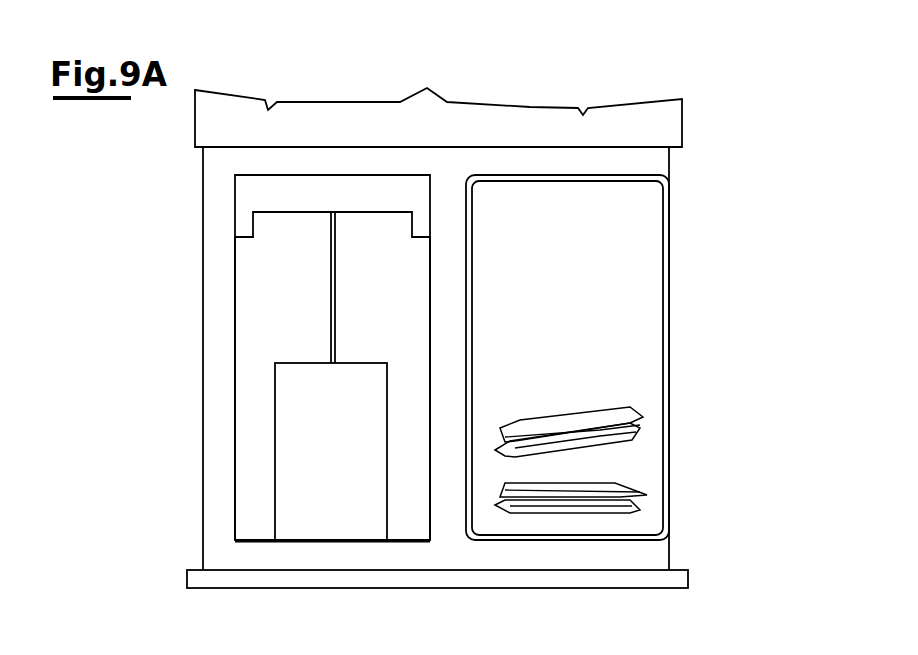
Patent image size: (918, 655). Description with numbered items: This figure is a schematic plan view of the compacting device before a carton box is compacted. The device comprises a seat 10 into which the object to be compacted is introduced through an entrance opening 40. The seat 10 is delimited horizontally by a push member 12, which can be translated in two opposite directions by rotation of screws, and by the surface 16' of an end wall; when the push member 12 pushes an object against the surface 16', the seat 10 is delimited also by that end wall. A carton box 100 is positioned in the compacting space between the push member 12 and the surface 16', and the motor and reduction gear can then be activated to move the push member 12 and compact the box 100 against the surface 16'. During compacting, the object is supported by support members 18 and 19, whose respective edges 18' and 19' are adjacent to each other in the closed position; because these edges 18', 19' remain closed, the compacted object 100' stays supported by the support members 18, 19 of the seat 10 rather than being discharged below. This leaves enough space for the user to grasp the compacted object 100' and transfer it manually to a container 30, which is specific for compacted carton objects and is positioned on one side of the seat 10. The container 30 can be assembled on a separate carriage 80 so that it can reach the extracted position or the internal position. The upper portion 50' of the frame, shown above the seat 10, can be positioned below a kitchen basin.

The seat 10 is at (362, 218).
The push member 12 is at (242, 200).
The surface of wall 16 16' is at (310, 597).
The support member 18 is at (192, 388).
The edge of support member 18 18' is at (299, 287).
The support member 19 is at (428, 440).
The edge of support member 19 19' is at (363, 287).
The container 30 is at (616, 283).
The entrance opening 40 is at (415, 475).
The upper portion of frame 50' is at (447, 354).
The carriage 80 is at (668, 175).
The carton box 100 is at (263, 451).
The compacted object 100' is at (620, 434).